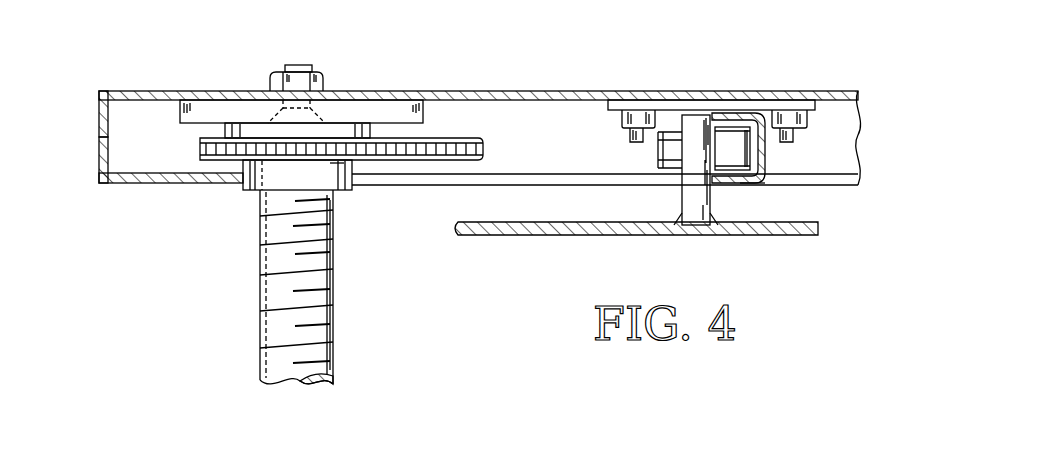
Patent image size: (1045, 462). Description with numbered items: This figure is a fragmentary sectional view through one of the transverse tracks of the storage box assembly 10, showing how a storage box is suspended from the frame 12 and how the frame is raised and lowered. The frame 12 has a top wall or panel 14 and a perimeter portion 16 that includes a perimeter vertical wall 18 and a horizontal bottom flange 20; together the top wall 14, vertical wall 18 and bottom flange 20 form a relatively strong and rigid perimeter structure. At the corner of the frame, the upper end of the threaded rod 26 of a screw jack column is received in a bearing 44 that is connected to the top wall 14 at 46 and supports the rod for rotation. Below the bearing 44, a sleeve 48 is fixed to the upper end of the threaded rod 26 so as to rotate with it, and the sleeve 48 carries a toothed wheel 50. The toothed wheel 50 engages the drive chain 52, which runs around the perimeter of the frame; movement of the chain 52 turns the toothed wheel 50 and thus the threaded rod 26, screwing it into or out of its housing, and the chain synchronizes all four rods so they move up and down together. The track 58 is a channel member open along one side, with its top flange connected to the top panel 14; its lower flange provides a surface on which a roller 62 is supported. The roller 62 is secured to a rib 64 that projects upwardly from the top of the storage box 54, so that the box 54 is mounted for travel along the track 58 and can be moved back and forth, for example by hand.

The storage box assembly 10 is at (411, 70).
The frame 12 is at (553, 91).
The top wall or panel 14 is at (485, 91).
The perimeter portion 16 is at (98, 122).
The perimeter vertical wall 18 is at (100, 150).
The horizontal bottom flange 20 is at (170, 183).
The threaded rod 26 is at (330, 298).
The bearing 44 is at (228, 110).
The connection of bearing to top wall 46 is at (298, 80).
The sleeve 48 is at (330, 165).
The toothed wheel 50 is at (290, 160).
The drive chain 52 is at (408, 153).
The storage box 54 is at (533, 237).
The track 58 is at (763, 184).
The roller 62 is at (740, 125).
The rib 64 is at (696, 122).